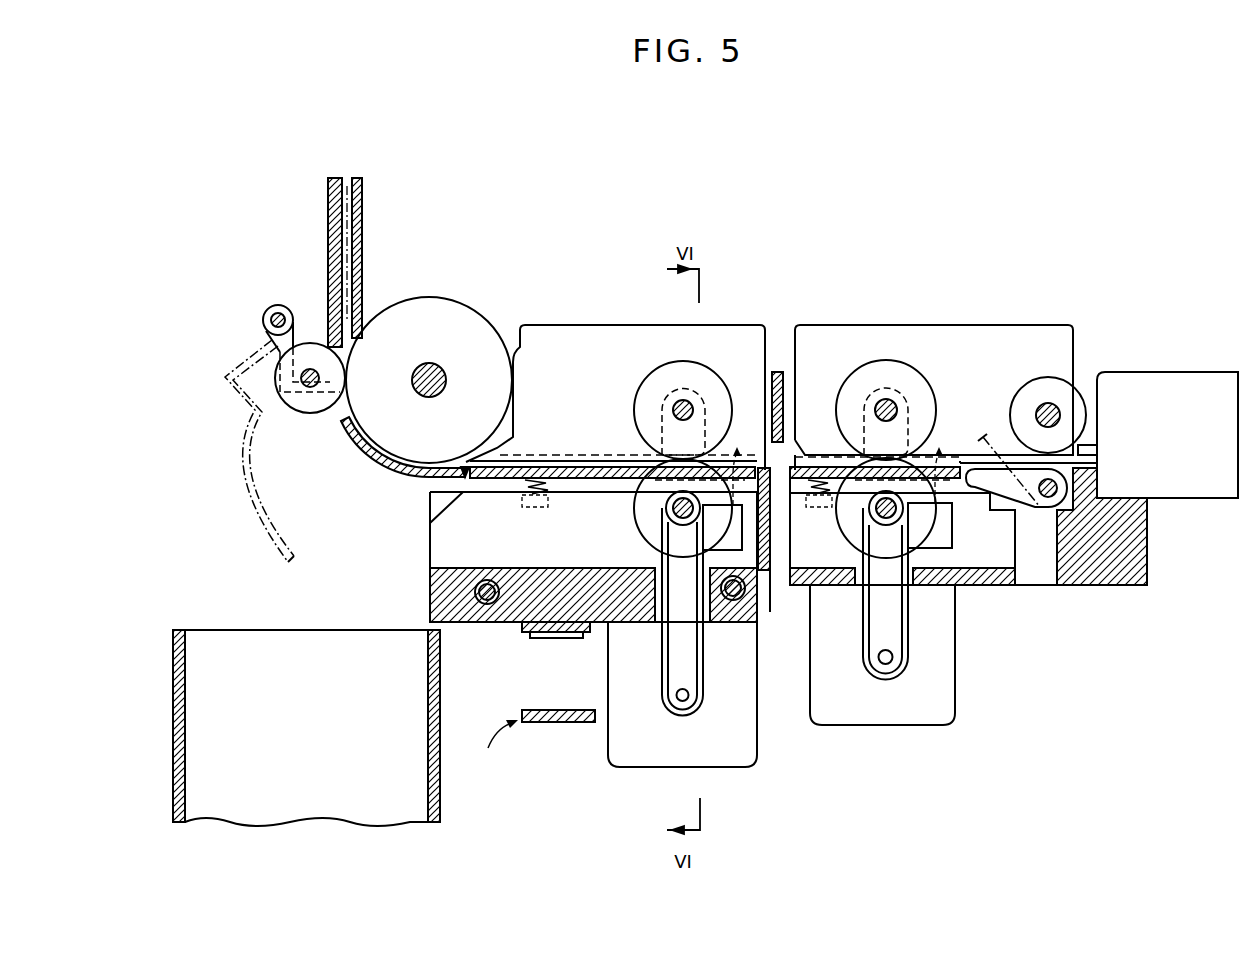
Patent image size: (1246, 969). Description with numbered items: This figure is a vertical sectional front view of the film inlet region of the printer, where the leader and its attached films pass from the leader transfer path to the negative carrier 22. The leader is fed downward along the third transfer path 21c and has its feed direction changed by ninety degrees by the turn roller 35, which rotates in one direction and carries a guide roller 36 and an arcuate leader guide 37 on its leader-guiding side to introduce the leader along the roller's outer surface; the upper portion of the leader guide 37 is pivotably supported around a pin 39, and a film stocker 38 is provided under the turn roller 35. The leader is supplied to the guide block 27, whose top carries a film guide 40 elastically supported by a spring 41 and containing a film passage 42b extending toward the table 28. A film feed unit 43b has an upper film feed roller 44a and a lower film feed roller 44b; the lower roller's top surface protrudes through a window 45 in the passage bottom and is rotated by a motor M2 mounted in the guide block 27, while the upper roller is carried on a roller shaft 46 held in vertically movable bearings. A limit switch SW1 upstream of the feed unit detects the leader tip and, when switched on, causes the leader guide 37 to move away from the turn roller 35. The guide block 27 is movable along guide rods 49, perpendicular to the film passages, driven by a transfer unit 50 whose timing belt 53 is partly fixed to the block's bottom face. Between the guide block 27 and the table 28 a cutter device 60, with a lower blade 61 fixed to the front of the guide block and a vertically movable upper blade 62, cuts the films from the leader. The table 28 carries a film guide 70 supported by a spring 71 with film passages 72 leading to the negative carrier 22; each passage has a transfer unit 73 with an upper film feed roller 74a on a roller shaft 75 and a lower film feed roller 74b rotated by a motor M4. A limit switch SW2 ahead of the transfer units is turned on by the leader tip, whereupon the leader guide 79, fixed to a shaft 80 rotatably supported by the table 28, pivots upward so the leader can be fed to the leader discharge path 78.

The third transfer path 21c is at (354, 214).
The negative carrier 22 is at (1165, 387).
The guide block 27 is at (470, 625).
The table 28 is at (973, 588).
The turn roller 35 is at (440, 312).
The guide roller 36 is at (277, 382).
The arcuate leader guide 37 is at (378, 468).
The film stocker 38 is at (173, 733).
The pin 39 is at (273, 314).
The film guide 40 is at (605, 466).
The spring 41 is at (548, 488).
The film passage 42b is at (543, 460).
The film feed unit 43b is at (700, 352).
The upper film feed roller 44a is at (660, 377).
The lower film feed roller 44b is at (650, 523).
The window 45 is at (640, 468).
The roller shaft 46 is at (683, 402).
The guide rod 49 is at (478, 592).
The transfer unit 50 is at (488, 745).
The timing belt 53 is at (555, 723).
The cutter device 60 is at (779, 355).
The lower blade 61 is at (769, 572).
The upper blade 62 is at (774, 404).
The film guide 70 is at (793, 482).
The spring 71 is at (830, 465).
The film passage 72 is at (822, 466).
The transfer unit 73 is at (901, 348).
The upper film feed roller 74a is at (880, 370).
The lower film feed roller 74b is at (912, 462).
The roller shaft 75 is at (892, 406).
The leader discharge path 78 is at (1040, 570).
The leader guide 79 is at (1000, 482).
The shaft 80 is at (1050, 498).
The motor M2 is at (640, 748).
The motor M4 is at (873, 718).
The limit switch SW1 is at (745, 556).
The limit switch SW2 is at (943, 550).